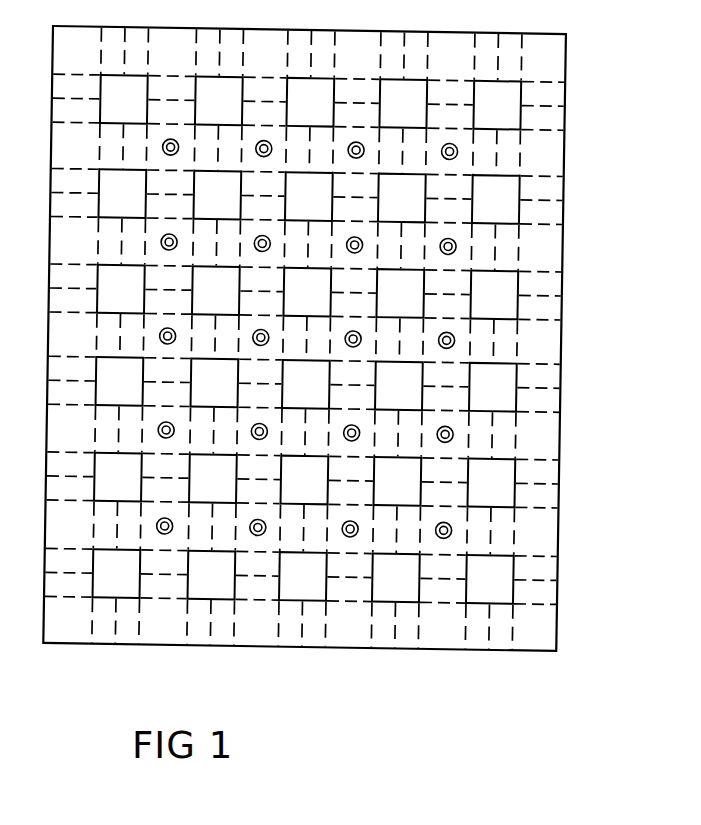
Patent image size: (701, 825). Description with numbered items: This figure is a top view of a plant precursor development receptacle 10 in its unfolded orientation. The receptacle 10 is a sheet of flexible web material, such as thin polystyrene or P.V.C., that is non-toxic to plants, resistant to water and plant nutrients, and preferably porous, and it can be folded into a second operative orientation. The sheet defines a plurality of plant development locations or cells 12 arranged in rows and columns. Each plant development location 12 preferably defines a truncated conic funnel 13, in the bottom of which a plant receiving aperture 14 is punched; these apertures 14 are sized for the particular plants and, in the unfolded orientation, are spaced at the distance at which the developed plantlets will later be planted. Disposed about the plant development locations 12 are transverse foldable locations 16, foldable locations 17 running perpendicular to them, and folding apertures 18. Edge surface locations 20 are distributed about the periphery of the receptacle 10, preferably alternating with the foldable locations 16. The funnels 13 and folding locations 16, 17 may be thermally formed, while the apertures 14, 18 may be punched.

The plant precursor development receptacle 10 is at (574, 350).
The plant development location 12 is at (453, 444).
The truncated conic funnel 13 is at (458, 421).
The plant receiving aperture 14 is at (445, 522).
The transverse foldable location 16 is at (524, 200).
The foldable location 17 is at (492, 67).
The folding aperture 18 is at (413, 398).
The edge surface location 20 is at (545, 545).